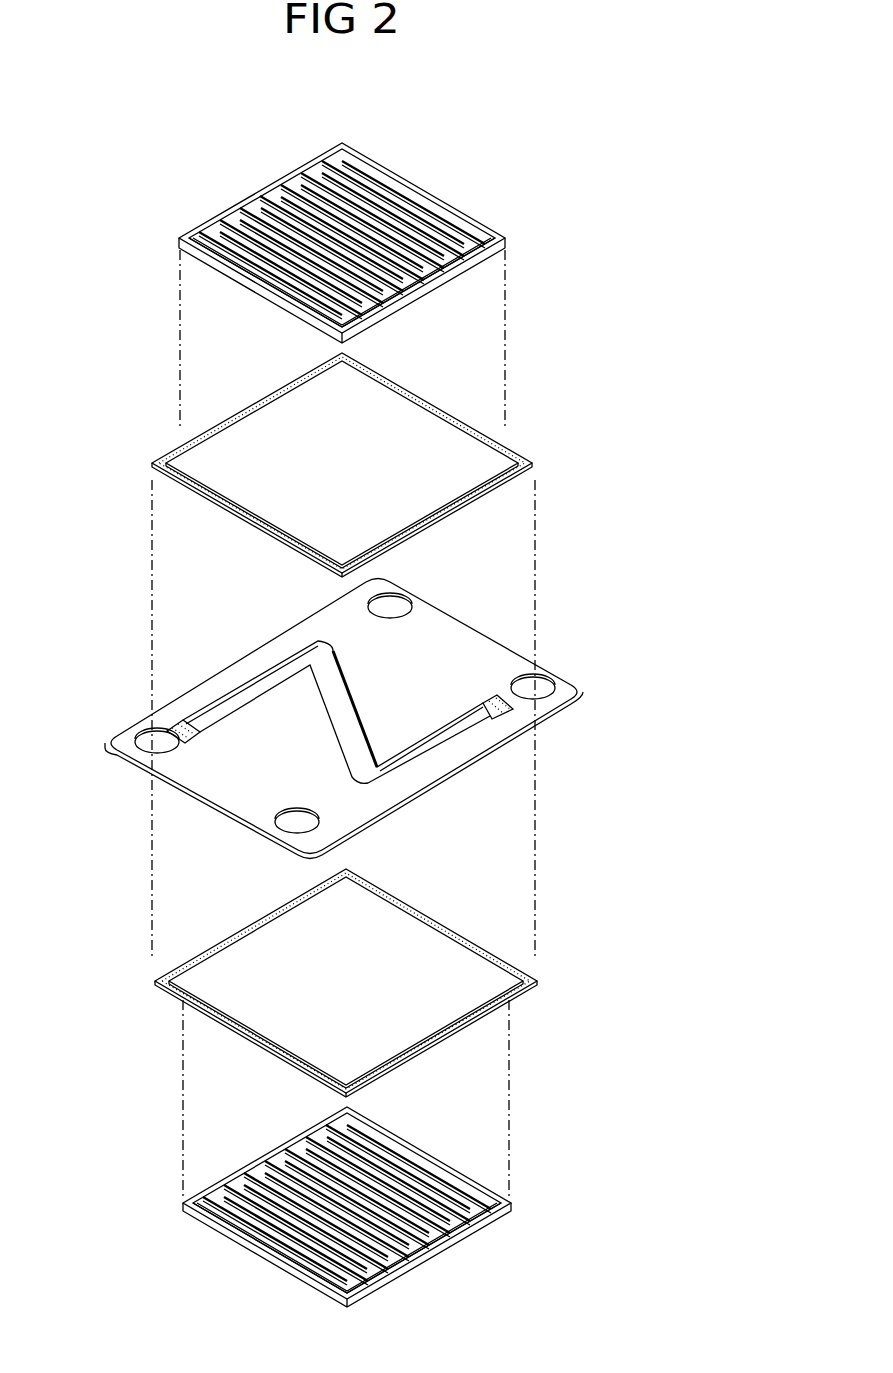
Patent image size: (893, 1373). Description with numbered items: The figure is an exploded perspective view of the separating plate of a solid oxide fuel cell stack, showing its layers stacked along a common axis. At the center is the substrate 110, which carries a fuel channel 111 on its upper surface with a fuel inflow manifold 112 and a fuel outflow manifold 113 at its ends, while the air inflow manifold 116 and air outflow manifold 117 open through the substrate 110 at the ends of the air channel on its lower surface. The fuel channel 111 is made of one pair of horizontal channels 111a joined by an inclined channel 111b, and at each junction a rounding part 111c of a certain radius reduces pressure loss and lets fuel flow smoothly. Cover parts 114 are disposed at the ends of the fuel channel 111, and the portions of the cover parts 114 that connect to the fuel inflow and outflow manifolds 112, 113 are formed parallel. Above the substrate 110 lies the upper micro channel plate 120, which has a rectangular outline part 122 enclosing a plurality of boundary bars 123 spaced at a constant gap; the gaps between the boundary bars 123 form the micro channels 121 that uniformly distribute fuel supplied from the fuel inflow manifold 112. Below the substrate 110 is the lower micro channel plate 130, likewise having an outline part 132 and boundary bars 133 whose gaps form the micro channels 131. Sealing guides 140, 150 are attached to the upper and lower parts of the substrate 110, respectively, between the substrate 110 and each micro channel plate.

The substrate 110 is at (458, 617).
The fuel channel 111 is at (515, 797).
The horizontal channel 111a is at (265, 688).
The inclined channel 111b is at (290, 657).
The rounding part 111c is at (307, 642).
The fuel inflow manifold 112 is at (140, 750).
The fuel outflow manifold 113 is at (543, 673).
The cover part 114 is at (168, 727).
The air inflow manifold 116 is at (280, 838).
The air outflow manifold 117 is at (410, 607).
The upper micro channel plate 120 is at (490, 163).
The micro channel 121 is at (352, 168).
The outline part 122 is at (413, 181).
The boundary bar 123 is at (413, 206).
The lower micro channel plate 130 is at (508, 1243).
The micro channel 131 is at (370, 1263).
The outline part 132 is at (447, 1232).
The boundary bar 133 is at (447, 1250).
The sealing guide 140 is at (408, 387).
The sealing guide 150 is at (472, 938).